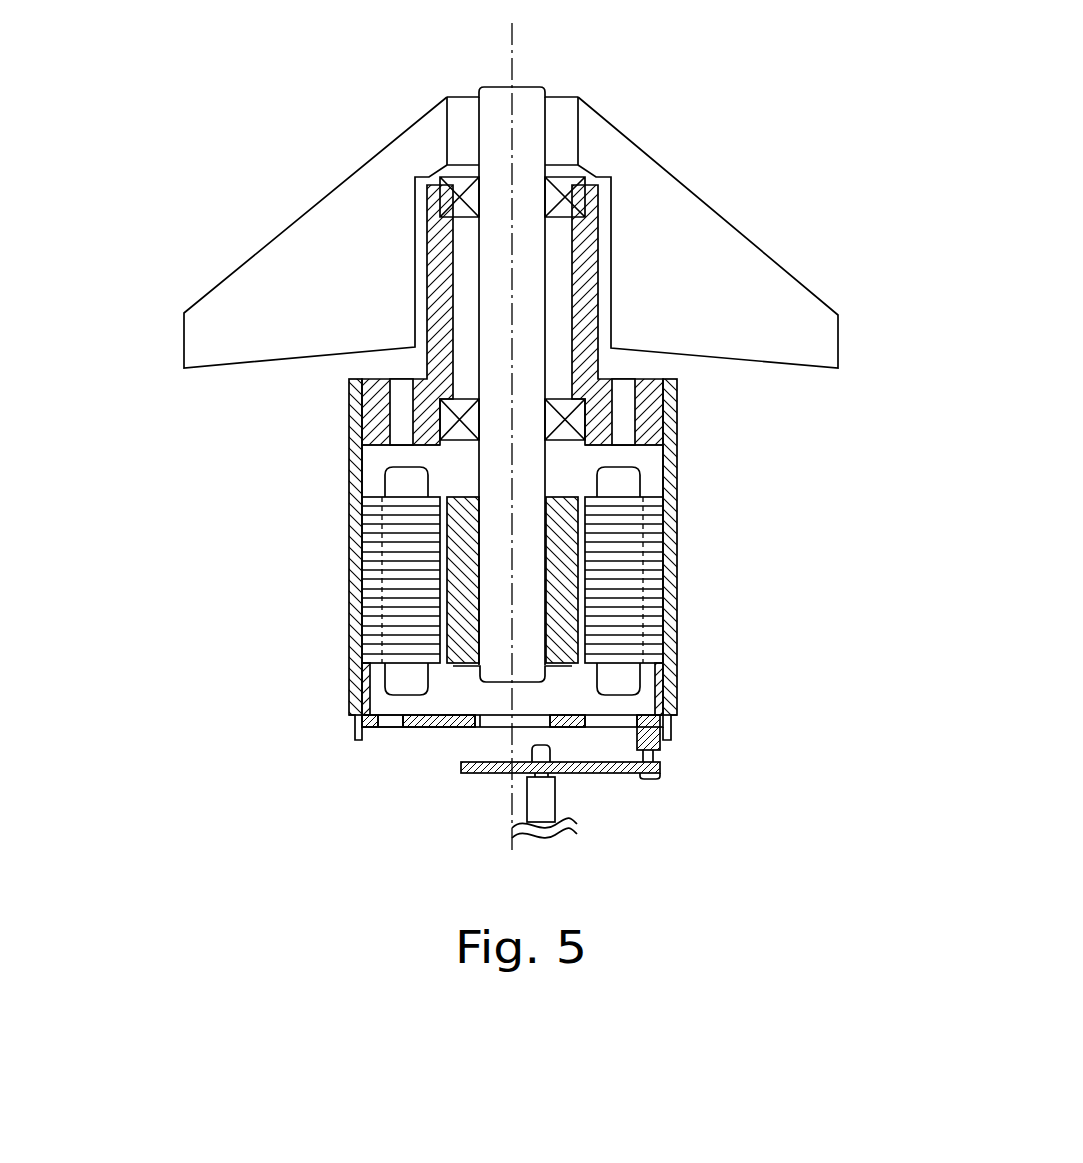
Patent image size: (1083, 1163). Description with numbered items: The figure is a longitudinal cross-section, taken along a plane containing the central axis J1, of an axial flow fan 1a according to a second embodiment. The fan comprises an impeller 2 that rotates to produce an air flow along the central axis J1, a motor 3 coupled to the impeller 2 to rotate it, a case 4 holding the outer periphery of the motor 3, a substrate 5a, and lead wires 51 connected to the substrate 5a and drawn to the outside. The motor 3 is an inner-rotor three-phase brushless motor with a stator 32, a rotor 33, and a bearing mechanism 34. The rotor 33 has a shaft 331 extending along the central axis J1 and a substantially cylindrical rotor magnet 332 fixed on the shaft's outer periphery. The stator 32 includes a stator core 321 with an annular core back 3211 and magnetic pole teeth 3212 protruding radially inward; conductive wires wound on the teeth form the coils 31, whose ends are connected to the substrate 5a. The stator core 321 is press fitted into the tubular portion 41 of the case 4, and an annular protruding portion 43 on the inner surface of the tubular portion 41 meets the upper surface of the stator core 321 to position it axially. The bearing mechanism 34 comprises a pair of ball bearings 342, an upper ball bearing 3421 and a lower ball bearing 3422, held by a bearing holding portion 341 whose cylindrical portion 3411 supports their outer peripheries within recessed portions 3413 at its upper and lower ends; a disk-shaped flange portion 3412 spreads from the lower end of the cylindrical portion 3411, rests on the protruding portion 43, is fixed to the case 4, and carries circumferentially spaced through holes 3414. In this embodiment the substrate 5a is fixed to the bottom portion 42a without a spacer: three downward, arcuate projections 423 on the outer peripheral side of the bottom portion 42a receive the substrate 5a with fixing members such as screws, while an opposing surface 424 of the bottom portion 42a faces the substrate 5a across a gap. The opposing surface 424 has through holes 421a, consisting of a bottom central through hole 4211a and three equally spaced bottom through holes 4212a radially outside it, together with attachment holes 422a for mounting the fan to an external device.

The axial flow fan 1a is at (755, 60).
The central axis J1 is at (512, 52).
The impeller 2 is at (715, 250).
The motor 3 is at (898, 690).
The coils 31 is at (620, 680).
The stator 32 is at (862, 635).
The stator core 321 is at (790, 628).
The core back 3211 is at (652, 600).
The magnetic pole teeth 3212 is at (622, 628).
The rotor 33 is at (776, 548).
The shaft 331 is at (590, 517).
The rotor magnet 332 is at (600, 552).
The bearing mechanism 34 is at (885, 478).
The bearing holding portion 341 is at (232, 440).
The cylindrical portion 3411 is at (428, 240).
The flange portion 3412 is at (401, 442).
The recessed portions 3413 is at (443, 218).
The through holes 3414 is at (372, 466).
The ball bearings 342 is at (790, 457).
The upper ball bearing 3421 is at (628, 378).
The lower ball bearing 3422 is at (584, 427).
The case 4 is at (138, 586).
The tubular portion 41 is at (349, 585).
The bottom portion 42a is at (362, 697).
The through holes 421a is at (234, 645).
The bottom central through hole 4211a is at (502, 716).
The bottom through holes 4212a is at (610, 712).
The attachment holes 422a is at (392, 733).
The projections 423 is at (652, 752).
The opposing surface 424 is at (440, 730).
The protruding portion 43 is at (385, 470).
The substrate 5a is at (655, 778).
The lead wires 51 is at (545, 793).